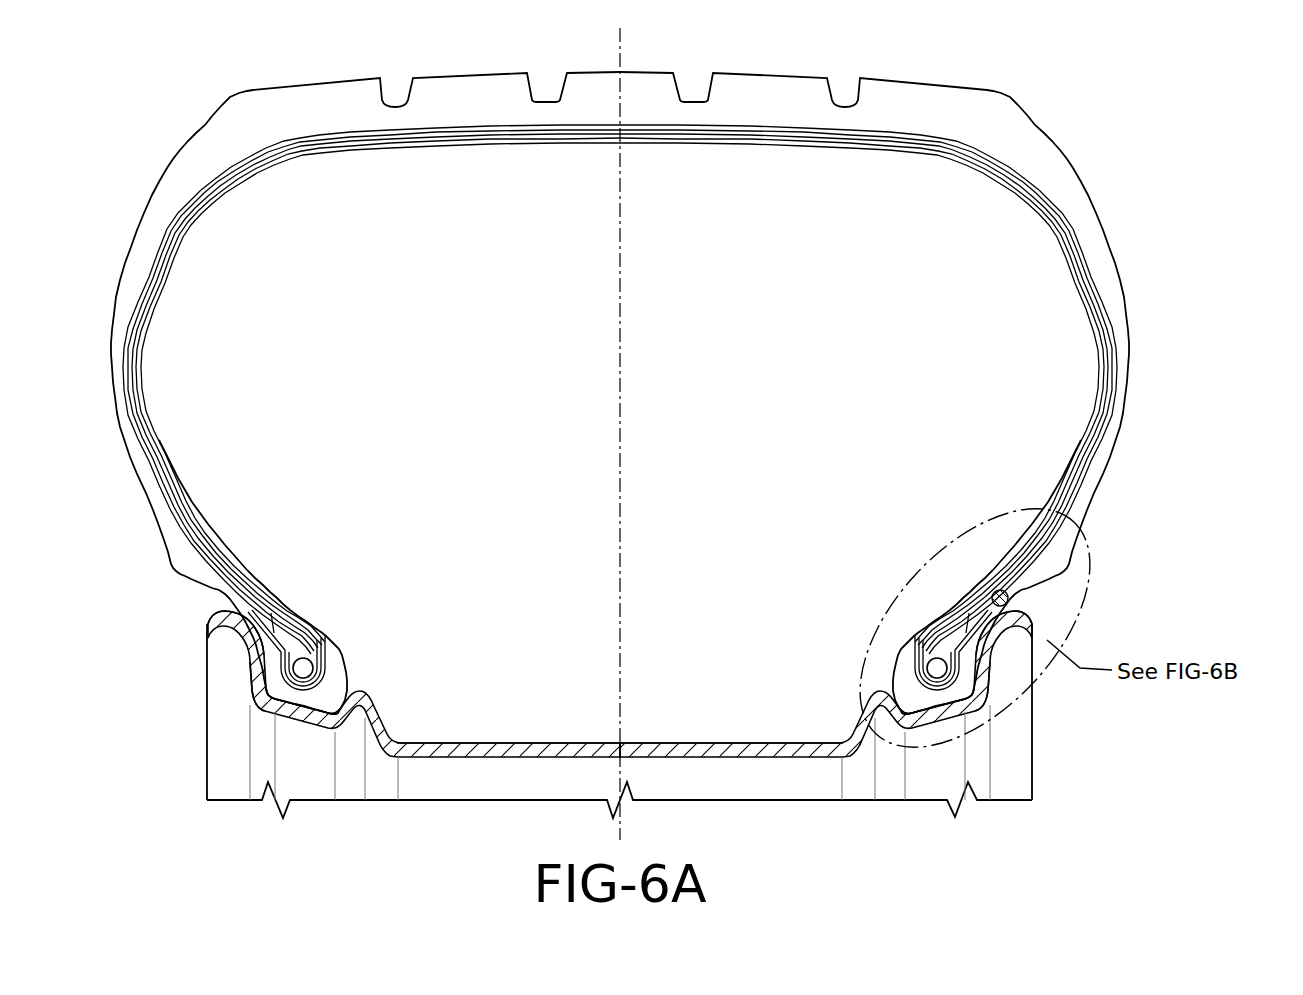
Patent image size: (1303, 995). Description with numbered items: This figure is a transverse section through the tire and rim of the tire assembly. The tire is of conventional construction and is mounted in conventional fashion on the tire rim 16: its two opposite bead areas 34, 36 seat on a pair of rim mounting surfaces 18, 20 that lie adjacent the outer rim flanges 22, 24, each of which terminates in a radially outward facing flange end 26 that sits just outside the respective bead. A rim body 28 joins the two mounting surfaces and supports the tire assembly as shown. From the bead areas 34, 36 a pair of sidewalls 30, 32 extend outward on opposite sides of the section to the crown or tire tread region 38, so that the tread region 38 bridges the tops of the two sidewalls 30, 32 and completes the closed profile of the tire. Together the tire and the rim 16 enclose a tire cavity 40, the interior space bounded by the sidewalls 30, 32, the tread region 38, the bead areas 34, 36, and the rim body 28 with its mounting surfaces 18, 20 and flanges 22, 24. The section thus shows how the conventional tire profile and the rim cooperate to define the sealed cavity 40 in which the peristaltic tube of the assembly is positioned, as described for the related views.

The tire rim 16 is at (478, 760).
The rim mounting surface 18 is at (927, 697).
The rim mounting surface 20 is at (320, 703).
The outer rim flange 22 is at (980, 685).
The outer rim flange 24 is at (260, 683).
The flange end 26 is at (213, 615).
The rim body 28 is at (760, 753).
The sidewall 30 is at (112, 297).
The sidewall 32 is at (1128, 297).
The bead area 34 is at (937, 670).
The bead area 36 is at (303, 665).
The tire tread region 38 is at (420, 77).
The tire cavity 40 is at (290, 217).